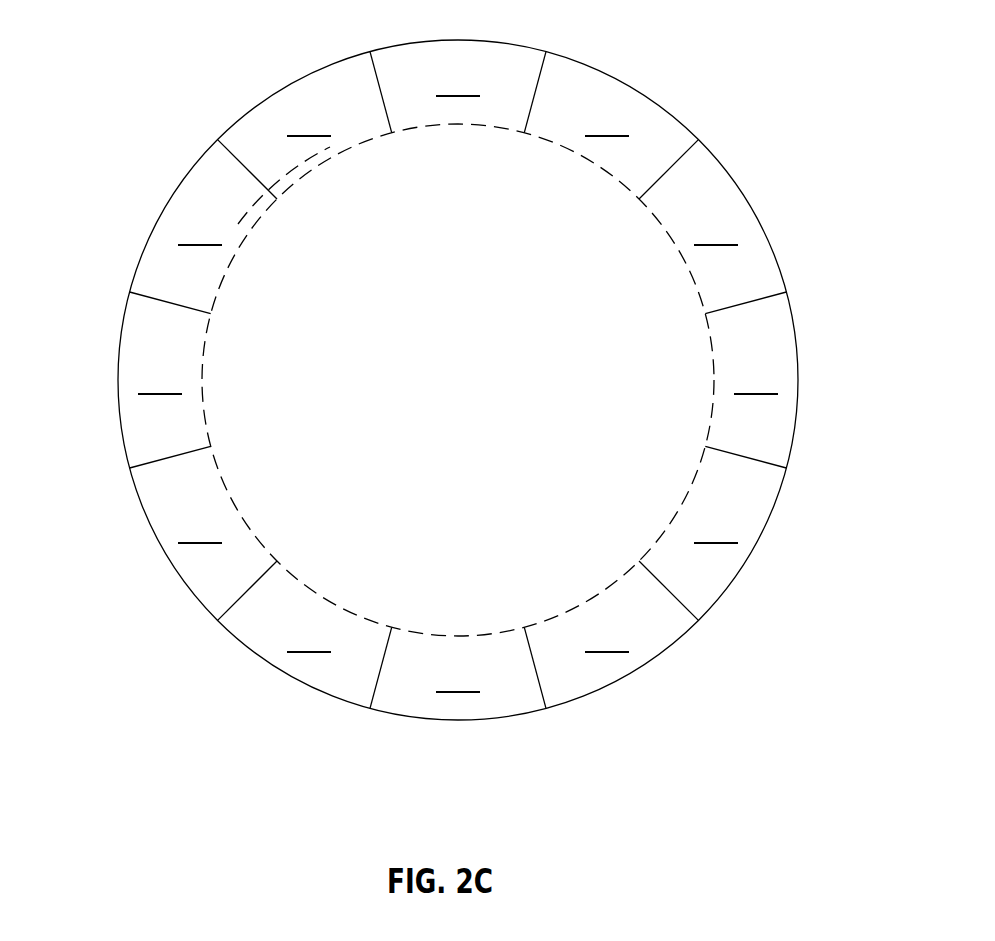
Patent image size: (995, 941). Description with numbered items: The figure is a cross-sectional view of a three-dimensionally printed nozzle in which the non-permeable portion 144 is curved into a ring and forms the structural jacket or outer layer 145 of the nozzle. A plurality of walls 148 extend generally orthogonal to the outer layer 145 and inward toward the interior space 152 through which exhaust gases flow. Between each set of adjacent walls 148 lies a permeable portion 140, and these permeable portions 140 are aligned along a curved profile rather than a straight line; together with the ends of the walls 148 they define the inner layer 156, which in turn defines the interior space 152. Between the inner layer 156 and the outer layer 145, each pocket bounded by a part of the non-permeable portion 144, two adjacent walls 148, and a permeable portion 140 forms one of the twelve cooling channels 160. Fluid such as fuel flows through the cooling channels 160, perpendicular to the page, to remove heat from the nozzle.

The permeable portion 140 is at (205, 343).
The non-permeable portion 144 is at (195, 593).
The outer layer 145 is at (116, 476).
The walls 148 is at (537, 97).
The interior space 152 is at (390, 585).
The inner layer 156 is at (300, 177).
The cooling channels 160 is at (458, 380).